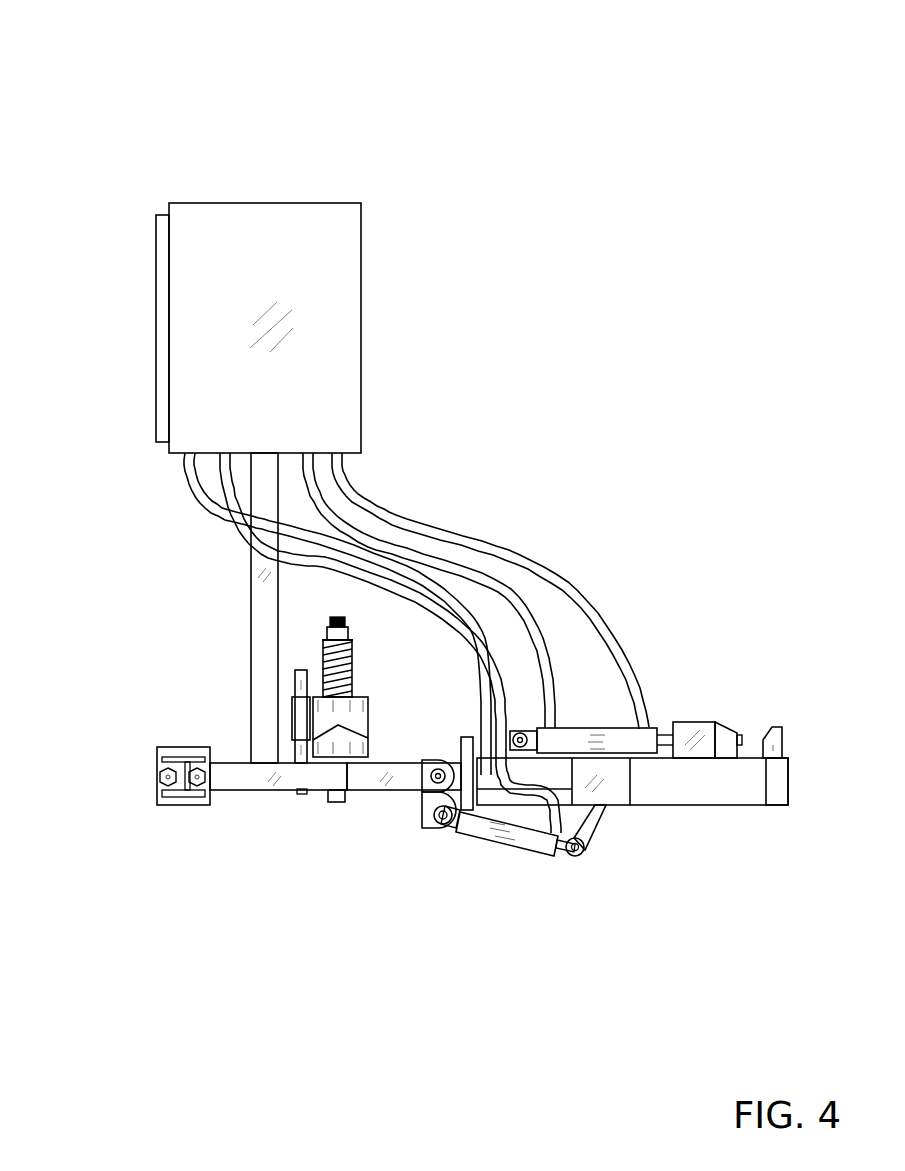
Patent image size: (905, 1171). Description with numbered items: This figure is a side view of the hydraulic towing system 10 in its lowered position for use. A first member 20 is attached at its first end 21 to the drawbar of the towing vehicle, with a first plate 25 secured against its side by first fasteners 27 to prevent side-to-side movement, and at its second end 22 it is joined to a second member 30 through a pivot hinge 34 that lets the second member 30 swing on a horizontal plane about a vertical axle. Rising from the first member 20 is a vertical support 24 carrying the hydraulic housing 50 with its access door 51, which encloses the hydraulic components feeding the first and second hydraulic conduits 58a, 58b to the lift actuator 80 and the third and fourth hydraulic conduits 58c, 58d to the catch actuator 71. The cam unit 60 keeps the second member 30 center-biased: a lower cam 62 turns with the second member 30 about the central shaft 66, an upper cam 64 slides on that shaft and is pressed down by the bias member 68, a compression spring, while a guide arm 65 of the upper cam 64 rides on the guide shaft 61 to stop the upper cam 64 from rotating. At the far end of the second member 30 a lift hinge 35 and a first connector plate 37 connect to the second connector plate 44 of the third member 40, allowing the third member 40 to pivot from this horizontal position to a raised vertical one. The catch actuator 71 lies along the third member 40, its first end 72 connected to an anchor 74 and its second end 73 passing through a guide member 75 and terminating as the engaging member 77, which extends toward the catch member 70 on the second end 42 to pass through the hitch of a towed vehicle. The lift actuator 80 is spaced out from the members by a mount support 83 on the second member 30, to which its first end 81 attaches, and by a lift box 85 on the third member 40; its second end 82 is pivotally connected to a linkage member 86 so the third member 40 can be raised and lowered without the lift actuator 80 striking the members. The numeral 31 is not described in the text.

The hydraulic towing system 10 is at (652, 135).
The hydraulic housing 50 is at (275, 232).
The access door 51 is at (155, 307).
The vertical support 24 is at (280, 495).
The first hydraulic conduit 58a is at (648, 663).
The second hydraulic conduit 58b is at (438, 563).
The third hydraulic conduit 58c is at (220, 474).
The fourth hydraulic conduit 58d is at (192, 518).
The central shaft 66 is at (333, 618).
The bias member 68 is at (325, 652).
The guide shaft 61 is at (293, 675).
The guide arm 65 is at (292, 718).
The lower cam 62 is at (350, 748).
The upper cam 64 is at (350, 720).
The cam unit 60 is at (362, 692).
The second member 30 is at (385, 790).
The first member 20 is at (260, 790).
The second end of first member 22 is at (343, 775).
The pivot hinge 34 is at (315, 792).
The arm bottom 31 is at (318, 793).
The first end of first member 21 is at (157, 775).
The first plate 25 is at (157, 750).
The first fasteners 27 is at (170, 785).
The second connector plate 44 is at (480, 810).
The lift hinge 35 is at (443, 768).
The first connector plate 37 is at (453, 820).
The first end of lift actuator 81 is at (440, 830).
The mount support 83 is at (423, 822).
The third member 40 is at (708, 787).
The second end of third member 42 is at (788, 780).
The lift box 85 is at (647, 806).
The catch actuator 71 is at (592, 727).
The anchor 74 is at (520, 733).
The first end of catch actuator 72 is at (540, 728).
The guide member 75 is at (703, 722).
The second end of catch actuator 73 is at (720, 724).
The engaging member 77 is at (742, 740).
The catch member 70 is at (783, 741).
The lift actuator 80 is at (503, 843).
The second end of lift actuator 82 is at (573, 856).
The linkage member 86 is at (603, 825).